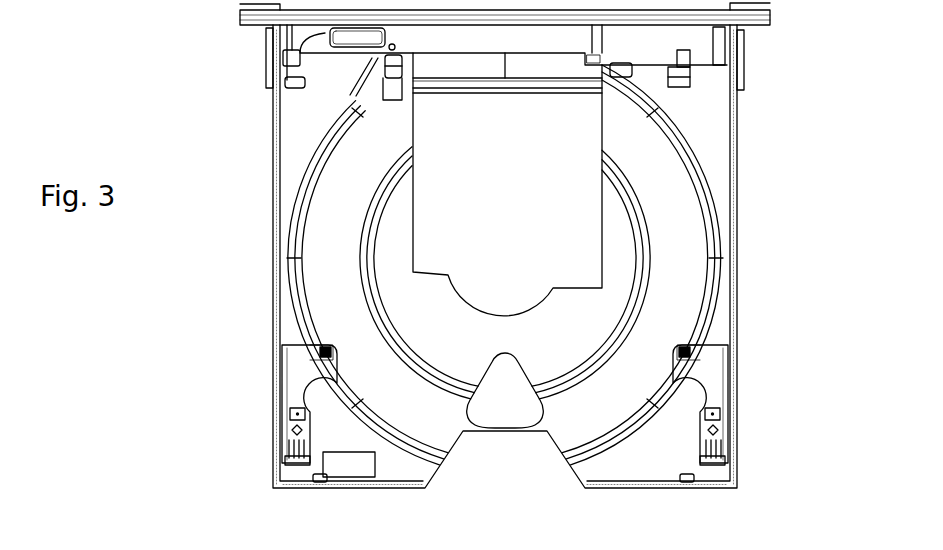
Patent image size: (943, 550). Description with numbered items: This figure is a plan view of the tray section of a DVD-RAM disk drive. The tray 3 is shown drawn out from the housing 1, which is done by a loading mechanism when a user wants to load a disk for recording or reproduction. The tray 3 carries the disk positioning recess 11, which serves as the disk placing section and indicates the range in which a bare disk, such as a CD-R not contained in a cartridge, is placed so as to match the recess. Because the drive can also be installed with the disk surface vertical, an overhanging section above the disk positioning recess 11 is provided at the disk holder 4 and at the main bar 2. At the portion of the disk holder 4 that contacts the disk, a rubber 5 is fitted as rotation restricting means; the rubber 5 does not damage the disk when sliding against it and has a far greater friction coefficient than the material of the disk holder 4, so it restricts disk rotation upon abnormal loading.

The housing 1 is at (273, 15).
The main bar 2 is at (698, 48).
The tray 3 is at (735, 223).
The disk holder 4 is at (302, 397).
The rubber 5 is at (320, 359).
The disk positioning recess 11 is at (678, 132).